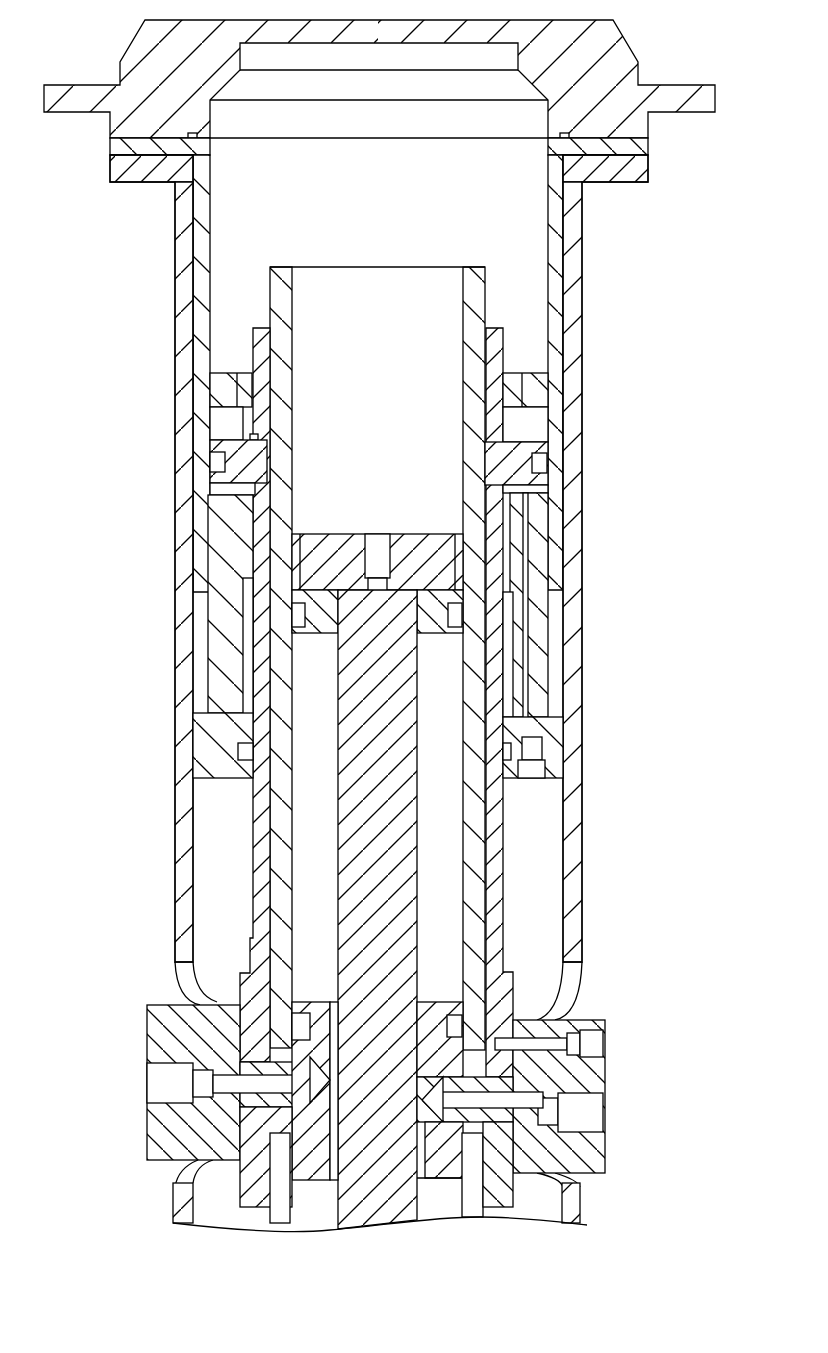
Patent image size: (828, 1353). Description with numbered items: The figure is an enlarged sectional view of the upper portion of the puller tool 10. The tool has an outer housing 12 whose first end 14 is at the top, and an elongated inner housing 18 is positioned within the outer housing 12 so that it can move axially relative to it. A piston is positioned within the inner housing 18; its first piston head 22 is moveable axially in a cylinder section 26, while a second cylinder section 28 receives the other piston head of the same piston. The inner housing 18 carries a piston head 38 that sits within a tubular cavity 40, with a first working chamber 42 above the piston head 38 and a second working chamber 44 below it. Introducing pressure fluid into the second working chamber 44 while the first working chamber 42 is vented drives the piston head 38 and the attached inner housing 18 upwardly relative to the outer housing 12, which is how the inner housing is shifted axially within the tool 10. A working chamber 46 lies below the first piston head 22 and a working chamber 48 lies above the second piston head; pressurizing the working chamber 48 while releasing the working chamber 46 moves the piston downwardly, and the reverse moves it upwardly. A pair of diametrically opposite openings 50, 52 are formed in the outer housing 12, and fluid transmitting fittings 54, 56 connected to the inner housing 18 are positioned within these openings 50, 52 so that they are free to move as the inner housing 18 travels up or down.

The puller tool 10 is at (165, 523).
The outer housing 12 is at (175, 752).
The first end 14 is at (132, 187).
The inner housing 18 is at (472, 1210).
The first piston head 22 is at (342, 557).
The cylinder section 26 is at (460, 855).
The cylinder section 28 is at (290, 1195).
The piston head 38 is at (230, 442).
The tubular cavity 40 is at (545, 440).
The first working chamber 42 is at (224, 425).
The second working chamber 44 is at (220, 490).
The working chamber 46 is at (317, 841).
The working chamber 48 is at (432, 1188).
The opening 50 is at (213, 992).
The opening 52 is at (553, 1000).
The fluid transmitting fitting 54 is at (148, 1120).
The fluid transmitting fitting 56 is at (597, 1148).